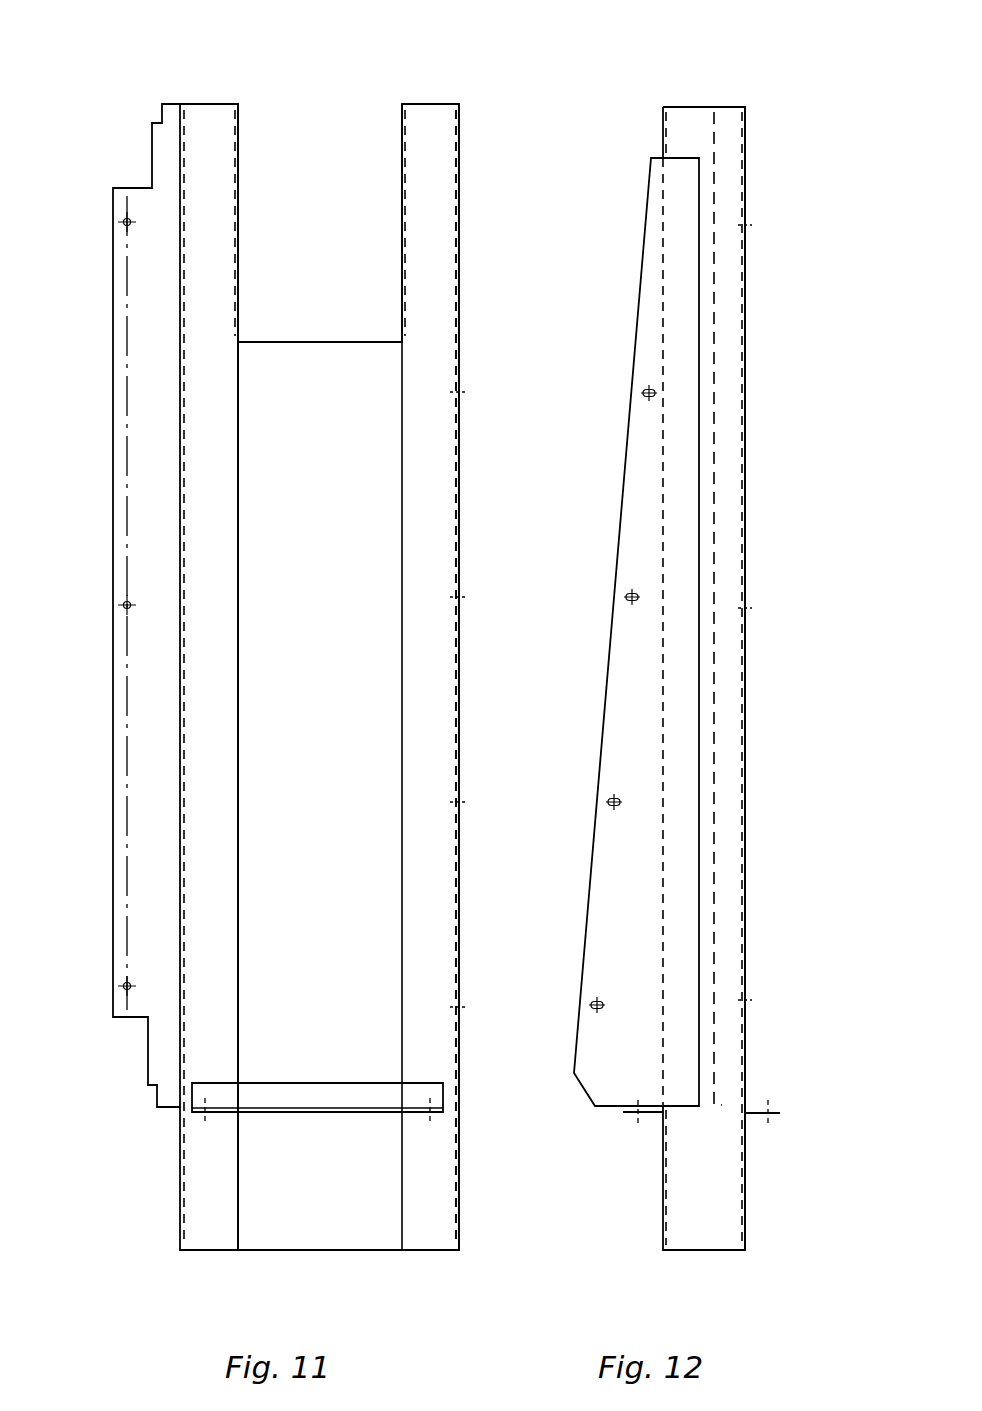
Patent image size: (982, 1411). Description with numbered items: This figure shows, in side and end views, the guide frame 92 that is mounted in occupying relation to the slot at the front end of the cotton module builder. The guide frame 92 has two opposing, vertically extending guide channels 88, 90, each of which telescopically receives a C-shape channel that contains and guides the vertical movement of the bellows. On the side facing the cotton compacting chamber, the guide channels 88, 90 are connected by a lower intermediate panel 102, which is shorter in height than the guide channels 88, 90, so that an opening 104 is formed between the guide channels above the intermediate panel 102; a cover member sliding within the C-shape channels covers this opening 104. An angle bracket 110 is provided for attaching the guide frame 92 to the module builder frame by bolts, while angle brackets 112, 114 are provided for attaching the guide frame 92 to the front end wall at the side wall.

In FIG. 11, the guide channel portion 88 is at (200, 103).
In FIG. 12, the guide channel portion 88 is at (700, 106).
In FIG. 11, the guide channel portion 90 is at (428, 103).
In FIG. 12, the guide channel portion 90 is at (728, 678).
In FIG. 11, the guide frame 92 is at (180, 1251).
In FIG. 12, the guide frame 92 is at (660, 1250).
In FIG. 11, the lower intermediate panel 102 is at (322, 341).
In FIG. 11, the opening 104 is at (317, 120).
In FIG. 11, the angle bracket 110 is at (305, 1114).
In FIG. 12, the angle bracket 110 is at (625, 1113).
In FIG. 11, the angle bracket 112 is at (112, 762).
In FIG. 11, the angle bracket 114 is at (460, 157).
In FIG. 12, the angle bracket 114 is at (589, 888).